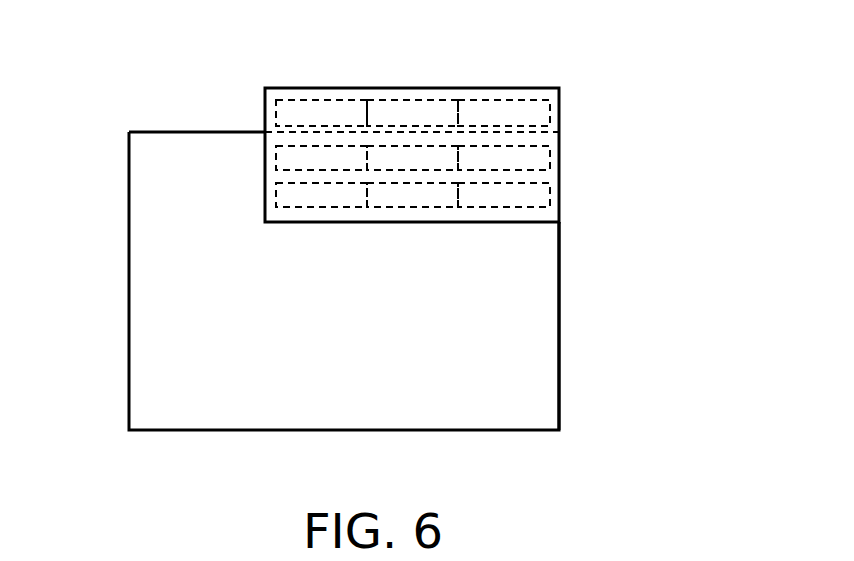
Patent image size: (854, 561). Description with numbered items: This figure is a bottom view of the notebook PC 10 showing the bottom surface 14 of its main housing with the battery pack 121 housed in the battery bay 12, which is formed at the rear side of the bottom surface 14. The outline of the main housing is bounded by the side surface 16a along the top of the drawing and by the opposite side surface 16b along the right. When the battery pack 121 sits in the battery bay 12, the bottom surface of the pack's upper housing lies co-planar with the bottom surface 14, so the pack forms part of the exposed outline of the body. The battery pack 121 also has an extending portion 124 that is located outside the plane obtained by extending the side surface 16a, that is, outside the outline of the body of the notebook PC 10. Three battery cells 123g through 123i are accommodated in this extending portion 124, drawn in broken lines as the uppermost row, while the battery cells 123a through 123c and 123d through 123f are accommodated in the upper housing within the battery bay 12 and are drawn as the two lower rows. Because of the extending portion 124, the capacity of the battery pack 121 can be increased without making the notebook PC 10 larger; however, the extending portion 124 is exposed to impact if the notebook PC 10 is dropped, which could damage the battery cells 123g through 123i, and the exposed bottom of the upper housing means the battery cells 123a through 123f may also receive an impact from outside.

The notebook PC 10 is at (137, 84).
The battery bay 12 is at (264, 187).
The bottom surface 14 is at (336, 314).
The side surface 16a is at (149, 131).
The second side surface 16b is at (559, 318).
The battery pack 121 is at (250, 81).
The extending portion 124 is at (422, 96).
The battery cell 123a is at (560, 198).
The battery cell 123c is at (665, 197).
The battery cell 123d is at (560, 158).
The battery cell 123f is at (665, 157).
The battery cell 123g is at (560, 114).
The battery cell 123i is at (665, 115).